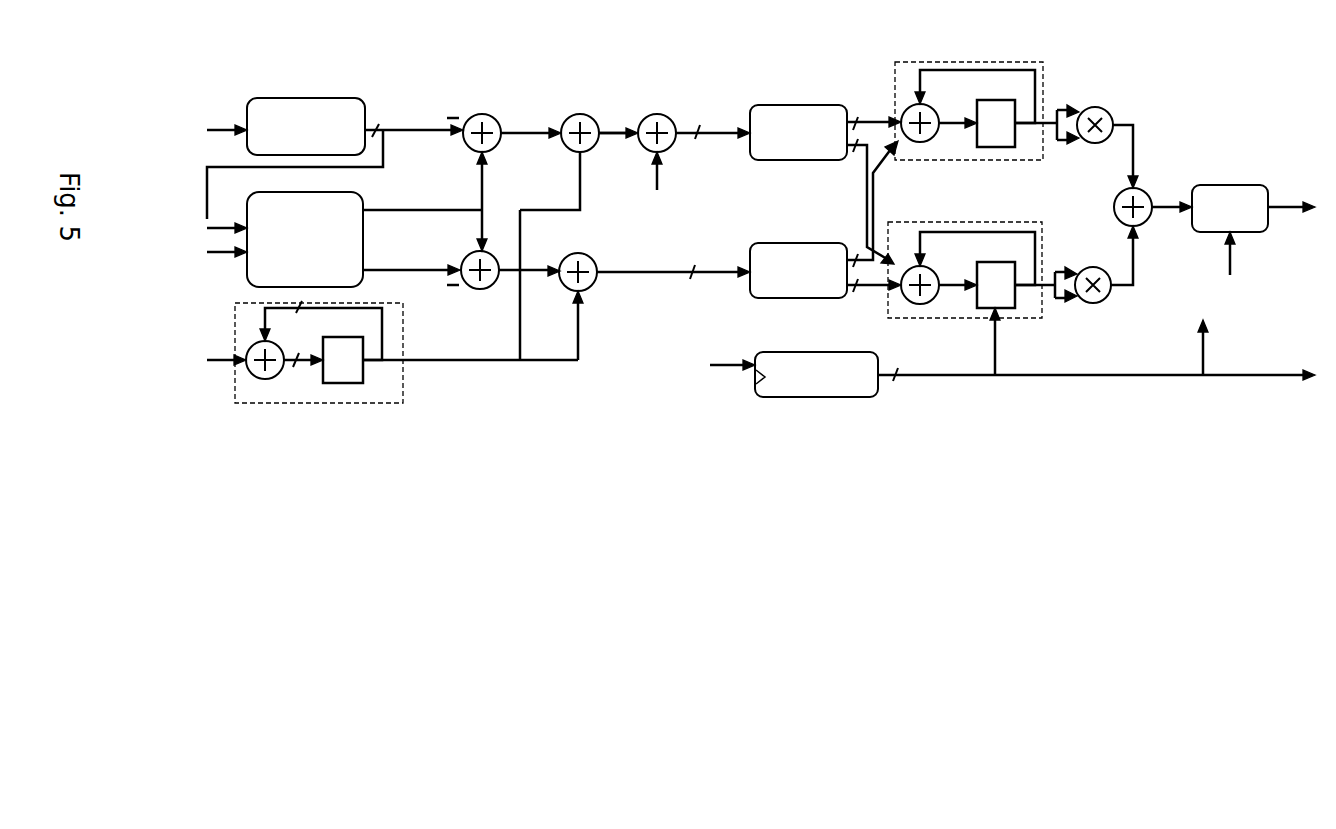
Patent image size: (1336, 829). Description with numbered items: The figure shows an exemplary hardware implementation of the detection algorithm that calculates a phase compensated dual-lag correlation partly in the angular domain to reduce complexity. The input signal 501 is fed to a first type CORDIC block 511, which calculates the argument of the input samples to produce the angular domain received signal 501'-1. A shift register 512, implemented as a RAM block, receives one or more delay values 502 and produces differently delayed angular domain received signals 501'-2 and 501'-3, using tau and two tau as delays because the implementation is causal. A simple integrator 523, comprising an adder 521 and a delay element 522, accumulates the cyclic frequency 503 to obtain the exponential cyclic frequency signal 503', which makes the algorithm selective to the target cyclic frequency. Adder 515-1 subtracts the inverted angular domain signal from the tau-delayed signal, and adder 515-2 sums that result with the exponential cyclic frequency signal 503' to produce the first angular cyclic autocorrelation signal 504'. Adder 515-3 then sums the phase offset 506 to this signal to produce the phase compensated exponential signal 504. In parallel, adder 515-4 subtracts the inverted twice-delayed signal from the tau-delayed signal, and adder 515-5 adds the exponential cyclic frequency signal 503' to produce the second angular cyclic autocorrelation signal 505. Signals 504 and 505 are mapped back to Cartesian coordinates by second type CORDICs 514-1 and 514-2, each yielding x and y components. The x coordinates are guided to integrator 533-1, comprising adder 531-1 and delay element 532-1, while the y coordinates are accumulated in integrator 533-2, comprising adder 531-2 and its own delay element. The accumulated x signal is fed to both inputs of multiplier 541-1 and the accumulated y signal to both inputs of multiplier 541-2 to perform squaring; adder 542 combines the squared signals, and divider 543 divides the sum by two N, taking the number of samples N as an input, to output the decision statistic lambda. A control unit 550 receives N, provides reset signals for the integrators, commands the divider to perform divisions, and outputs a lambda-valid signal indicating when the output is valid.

The input signal 501 is at (201, 95).
The delay values 502 is at (176, 235).
The cyclic frequency 503 is at (195, 335).
The first type CORDIC block 511 is at (350, 96).
The shift register 512 is at (305, 239).
The angular domain received signal 501'-1 is at (335, 159).
The delayed angular domain received signal 501'-2 is at (425, 201).
The delayed angular domain received signal 501'-3 is at (411, 283).
The exponential cyclic frequency signal 503' is at (471, 283).
The phase compensated exponential signal 504 is at (713, 144).
The first angular cyclic autocorrelation signal 504' is at (615, 113).
The second angular cyclic autocorrelation signal 505 is at (665, 280).
The phase offset 506 is at (627, 218).
The second type CORDIC 514-1 is at (802, 102).
The second type CORDIC 514-2 is at (799, 242).
The adder 515-1 is at (487, 114).
The adder 515-2 is at (581, 114).
The adder 515-3 is at (664, 114).
The adder 515-4 is at (487, 292).
The adder 515-5 is at (593, 287).
The adder 521 is at (260, 385).
The delay element 522 is at (342, 385).
The integrator 523 is at (390, 405).
The adder 531-1 is at (904, 104).
The adder 531-2 is at (905, 302).
The delay element 532-1 is at (1000, 148).
The integrator 533-1 is at (916, 62).
The integrator 533-2 is at (933, 221).
The multiplier 541-1 is at (1110, 106).
The multiplier 541-2 is at (1093, 303).
The adder 542 is at (1148, 191).
The divider 543 is at (1236, 185).
The control unit 550 is at (809, 400).